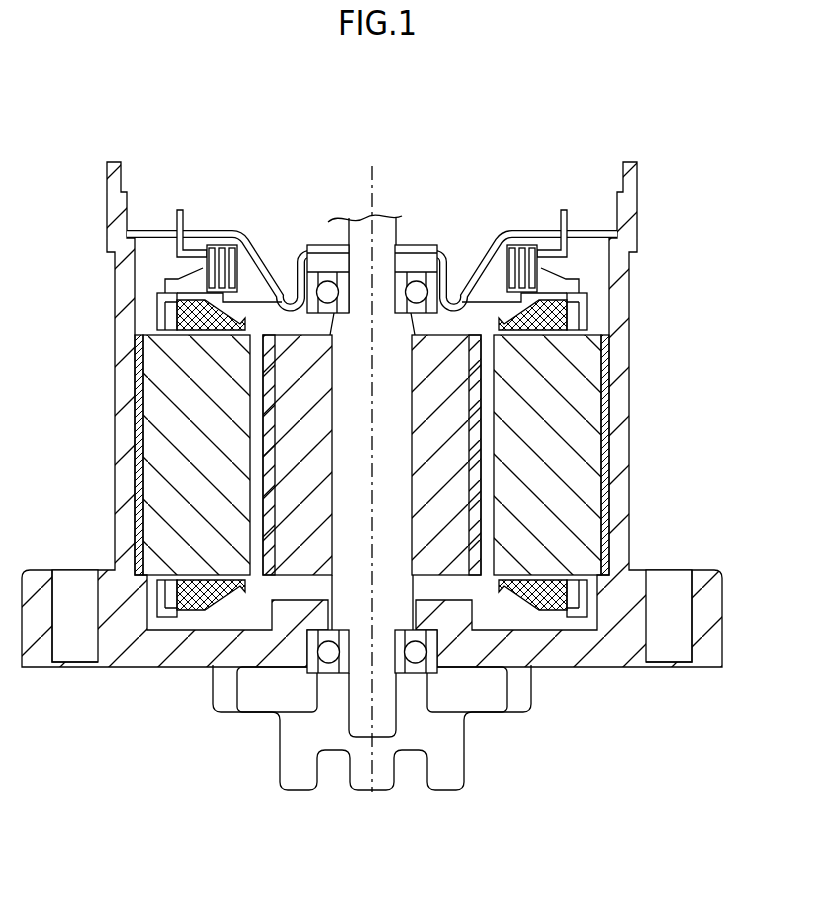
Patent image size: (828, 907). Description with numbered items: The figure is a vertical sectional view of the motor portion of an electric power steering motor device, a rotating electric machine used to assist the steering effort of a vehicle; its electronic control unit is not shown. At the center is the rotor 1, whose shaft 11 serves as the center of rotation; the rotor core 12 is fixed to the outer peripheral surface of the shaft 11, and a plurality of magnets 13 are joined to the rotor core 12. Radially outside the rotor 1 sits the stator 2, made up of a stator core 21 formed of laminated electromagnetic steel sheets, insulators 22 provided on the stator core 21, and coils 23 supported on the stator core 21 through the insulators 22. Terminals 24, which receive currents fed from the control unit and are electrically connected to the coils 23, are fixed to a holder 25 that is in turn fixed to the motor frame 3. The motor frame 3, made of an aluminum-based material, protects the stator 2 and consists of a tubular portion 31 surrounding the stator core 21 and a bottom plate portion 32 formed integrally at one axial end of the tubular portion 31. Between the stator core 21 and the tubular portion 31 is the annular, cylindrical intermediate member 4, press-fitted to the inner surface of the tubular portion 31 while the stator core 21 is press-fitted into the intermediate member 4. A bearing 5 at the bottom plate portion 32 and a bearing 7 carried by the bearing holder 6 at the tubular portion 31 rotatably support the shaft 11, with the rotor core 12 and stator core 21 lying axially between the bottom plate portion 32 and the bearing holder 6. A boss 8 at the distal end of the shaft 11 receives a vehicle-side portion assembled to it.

The rotor 1 is at (482, 370).
The stator 2 is at (598, 508).
The motor frame 3 is at (630, 418).
The intermediate member 4 is at (135, 398).
The bearing 5 is at (334, 668).
The bearing holder 6 is at (312, 248).
The bearing 7 is at (432, 265).
The boss 8 is at (455, 768).
The shaft 11 is at (400, 545).
The rotor core 12 is at (290, 538).
The magnets 13 is at (266, 495).
The stator core 21 is at (158, 454).
The insulators 22 is at (165, 328).
The coils 23 is at (565, 326).
The terminals 24 is at (195, 210).
The holder 25 is at (572, 292).
The tubular portion 31 is at (620, 460).
The bottom plate portion 32 is at (610, 657).